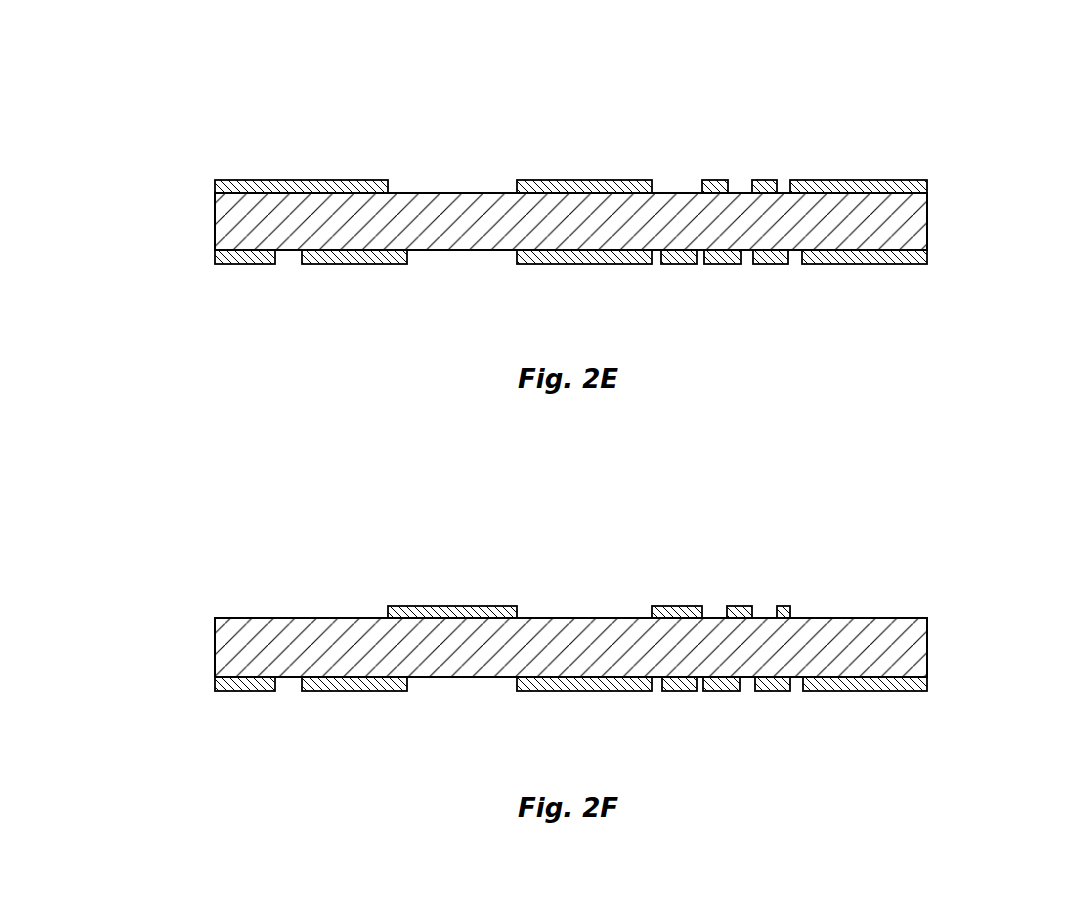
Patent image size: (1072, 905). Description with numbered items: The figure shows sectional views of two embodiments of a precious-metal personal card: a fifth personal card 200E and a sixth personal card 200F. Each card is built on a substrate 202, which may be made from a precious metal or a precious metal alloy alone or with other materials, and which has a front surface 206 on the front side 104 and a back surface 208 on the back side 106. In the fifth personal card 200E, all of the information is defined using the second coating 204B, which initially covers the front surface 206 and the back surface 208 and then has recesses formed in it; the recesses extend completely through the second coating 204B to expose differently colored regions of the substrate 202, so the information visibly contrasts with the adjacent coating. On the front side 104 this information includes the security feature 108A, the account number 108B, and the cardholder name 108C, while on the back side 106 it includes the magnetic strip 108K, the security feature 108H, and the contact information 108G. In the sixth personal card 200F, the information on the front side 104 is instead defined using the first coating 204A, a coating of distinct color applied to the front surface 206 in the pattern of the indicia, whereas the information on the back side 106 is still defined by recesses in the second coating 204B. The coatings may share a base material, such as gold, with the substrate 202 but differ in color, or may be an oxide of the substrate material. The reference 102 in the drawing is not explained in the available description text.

In FIG. 2E, the fifth personal card 200E is at (122, 88).
In FIG. 2F, the sixth personal card 200F is at (122, 515).
In FIG. 2E, the substrate 102 is at (936, 223).
In FIG. 2F, the substrate 102 is at (934, 650).
In FIG. 2E, the substrate 202 is at (318, 233).
In FIG. 2F, the substrate 202 is at (318, 660).
In FIG. 2E, the front side 104 is at (350, 177).
In FIG. 2F, the front side 104 is at (352, 602).
In FIG. 2E, the back side 106 is at (555, 261).
In FIG. 2F, the back side 106 is at (555, 688).
In FIG. 2E, the front surface 206 is at (273, 161).
In FIG. 2F, the front surface 206 is at (238, 615).
In FIG. 2E, the back surface 208 is at (225, 258).
In FIG. 2F, the back surface 208 is at (225, 686).
In FIG. 2E, the security feature 108A is at (452, 180).
In FIG. 2F, the security feature 108A is at (452, 605).
In FIG. 2E, the account number 108B is at (713, 177).
In FIG. 2F, the account number 108B is at (715, 605).
In FIG. 2E, the cardholder name 108C is at (795, 177).
In FIG. 2F, the cardholder name 108C is at (795, 605).
In FIG. 2E, the contact information 108G is at (800, 273).
In FIG. 2F, the contact information 108G is at (800, 700).
In FIG. 2E, the security feature 108H is at (435, 263).
In FIG. 2F, the security feature 108H is at (437, 683).
In FIG. 2E, the magnetic strip 108K is at (285, 263).
In FIG. 2F, the magnetic strip 108K is at (285, 690).
In FIG. 2F, the first coating 204A is at (792, 612).
In FIG. 2E, the second coating 204B is at (927, 187).
In FIG. 2F, the second coating 204B is at (927, 687).